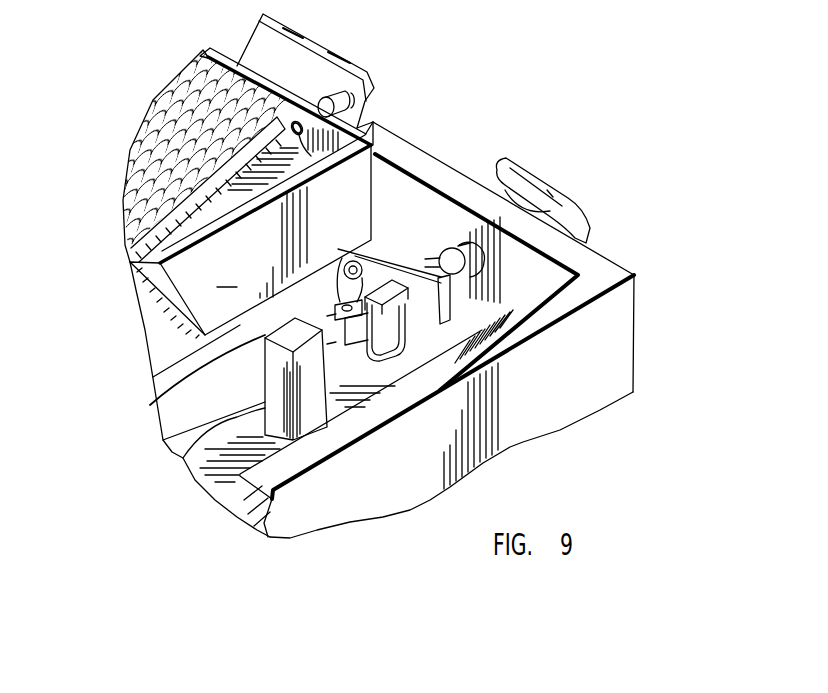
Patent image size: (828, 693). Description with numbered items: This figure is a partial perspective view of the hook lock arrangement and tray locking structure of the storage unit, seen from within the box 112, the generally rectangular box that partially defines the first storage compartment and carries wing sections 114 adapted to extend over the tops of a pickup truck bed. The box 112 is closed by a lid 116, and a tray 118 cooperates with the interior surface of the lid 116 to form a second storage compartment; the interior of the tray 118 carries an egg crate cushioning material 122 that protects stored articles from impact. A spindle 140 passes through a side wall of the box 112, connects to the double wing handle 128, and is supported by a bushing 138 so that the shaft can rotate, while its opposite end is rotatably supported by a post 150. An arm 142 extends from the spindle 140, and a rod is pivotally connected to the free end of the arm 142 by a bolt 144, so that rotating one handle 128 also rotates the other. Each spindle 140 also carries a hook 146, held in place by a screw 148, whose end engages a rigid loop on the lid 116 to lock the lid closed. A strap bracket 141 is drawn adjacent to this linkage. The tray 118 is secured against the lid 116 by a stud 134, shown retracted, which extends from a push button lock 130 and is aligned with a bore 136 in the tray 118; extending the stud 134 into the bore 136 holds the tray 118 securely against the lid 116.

The box 112 is at (617, 328).
The wing sections 114 is at (372, 469).
The lid 116 is at (317, 45).
The tray 118 is at (266, 191).
The cushioning material 122 is at (153, 108).
The handle 128 is at (564, 206).
The push button lock 130 is at (372, 100).
The stud 134 is at (327, 98).
The bore 136 is at (373, 124).
The bushing 138 is at (470, 262).
The spindle 140 is at (478, 273).
The strap bracket 141 is at (386, 332).
The arm 142 is at (440, 300).
The bolt 144 is at (395, 250).
The hook 146 is at (470, 372).
The screw 148 is at (265, 348).
The post 150 is at (180, 466).